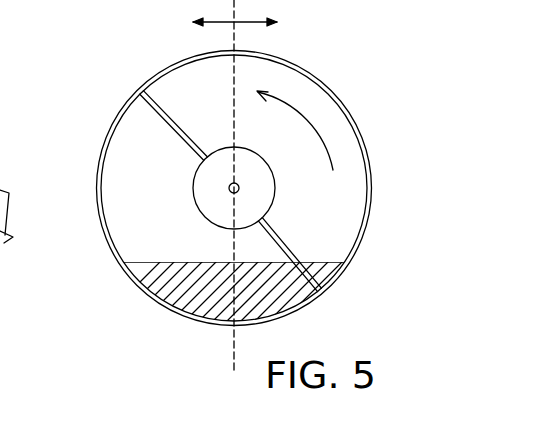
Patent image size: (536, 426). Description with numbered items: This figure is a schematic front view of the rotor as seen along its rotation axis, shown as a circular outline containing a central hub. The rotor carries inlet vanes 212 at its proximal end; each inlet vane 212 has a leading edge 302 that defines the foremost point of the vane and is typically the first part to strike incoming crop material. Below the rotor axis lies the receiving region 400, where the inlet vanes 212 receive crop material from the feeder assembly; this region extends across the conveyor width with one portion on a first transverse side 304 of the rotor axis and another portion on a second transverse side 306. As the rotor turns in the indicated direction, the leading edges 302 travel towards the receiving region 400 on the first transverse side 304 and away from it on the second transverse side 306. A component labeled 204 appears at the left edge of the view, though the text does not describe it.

The inlet vanes 212 is at (183, 91).
The leading edge 302 is at (164, 113).
The first transverse side 304 is at (212, 22).
The second transverse side 306 is at (296, 22).
The receiving region 400 is at (191, 300).
The nozzle 204 is at (10, 237).